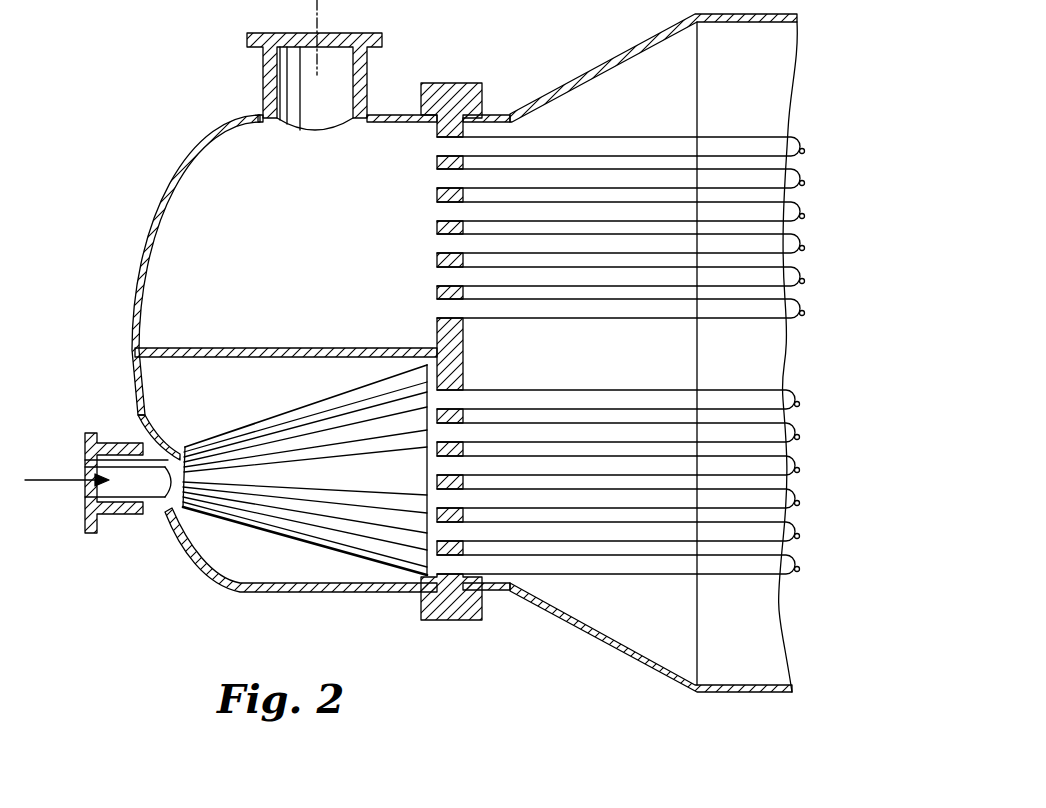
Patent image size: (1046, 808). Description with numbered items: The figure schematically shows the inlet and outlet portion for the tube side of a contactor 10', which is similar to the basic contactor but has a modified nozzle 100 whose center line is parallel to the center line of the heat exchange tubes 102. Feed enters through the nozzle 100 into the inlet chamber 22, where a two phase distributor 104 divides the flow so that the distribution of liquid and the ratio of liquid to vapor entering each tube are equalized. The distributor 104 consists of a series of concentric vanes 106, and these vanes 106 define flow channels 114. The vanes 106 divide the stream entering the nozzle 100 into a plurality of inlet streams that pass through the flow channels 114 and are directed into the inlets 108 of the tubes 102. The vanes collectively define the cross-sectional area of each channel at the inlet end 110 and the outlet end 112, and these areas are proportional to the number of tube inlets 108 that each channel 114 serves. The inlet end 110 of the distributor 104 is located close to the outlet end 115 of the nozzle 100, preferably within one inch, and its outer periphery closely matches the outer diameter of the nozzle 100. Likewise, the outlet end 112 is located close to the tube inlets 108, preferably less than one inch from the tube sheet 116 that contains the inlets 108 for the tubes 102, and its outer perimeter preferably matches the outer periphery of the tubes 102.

The inlet chamber 22 is at (176, 390).
The inlet end 110 is at (136, 411).
The modified nozzle 100 is at (136, 516).
The outlet end of nozzle 115 is at (178, 533).
The concentric vanes 106 is at (262, 485).
The flow channels 114 is at (395, 430).
The two phase distributor 104 is at (276, 550).
The tube sheet 116 is at (463, 339).
The outlet end 112 is at (422, 600).
The tube inlets 108 is at (442, 503).
The heat exchange tubes 102 is at (594, 577).
The contactor 10' is at (738, 381).